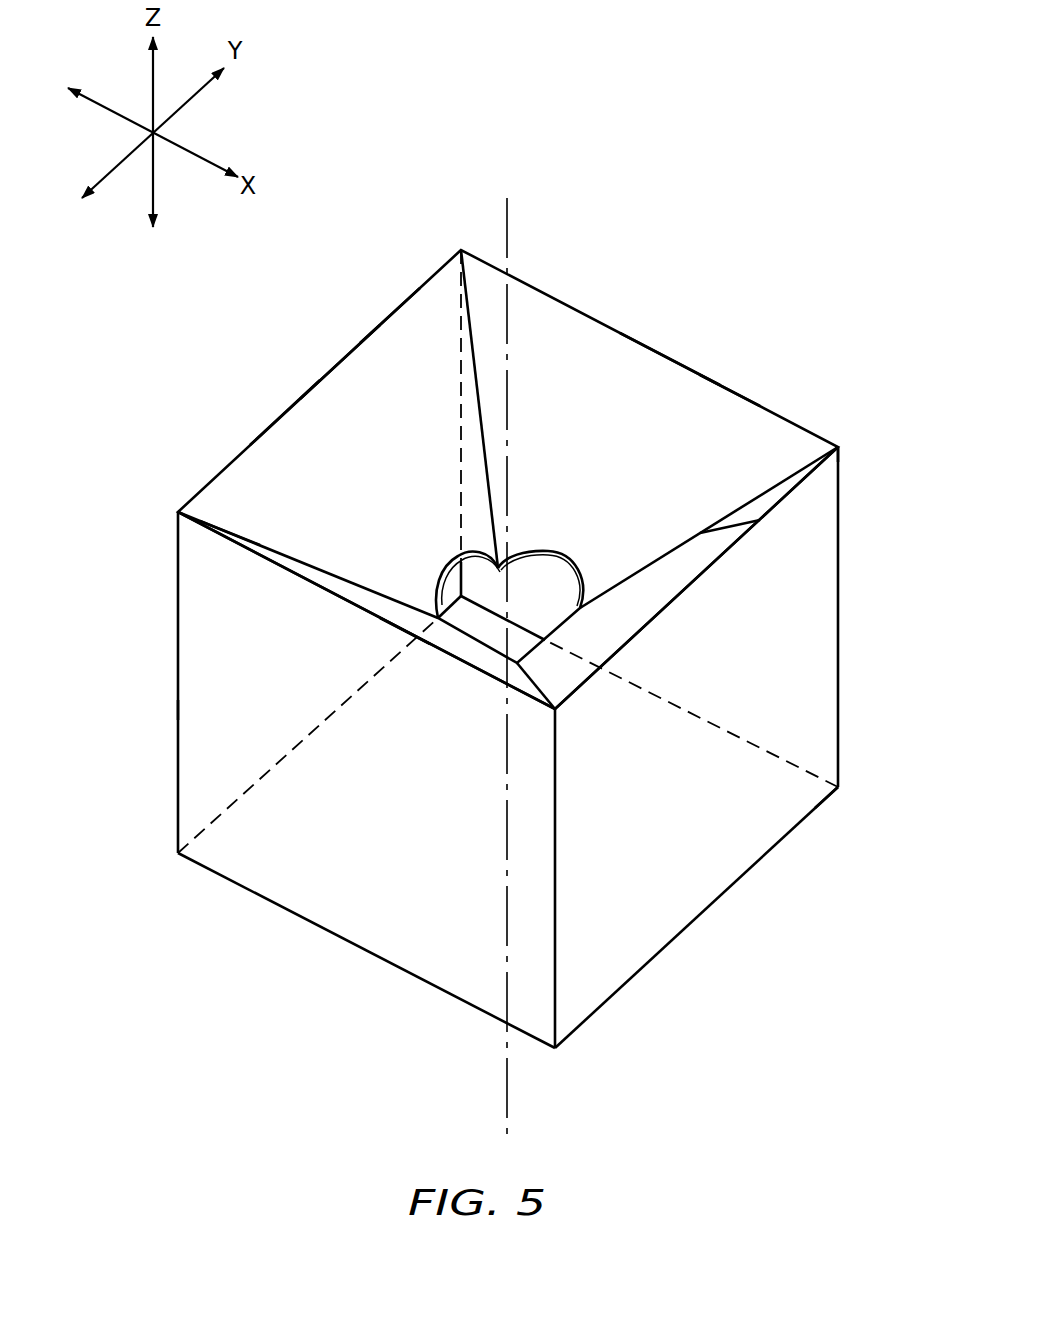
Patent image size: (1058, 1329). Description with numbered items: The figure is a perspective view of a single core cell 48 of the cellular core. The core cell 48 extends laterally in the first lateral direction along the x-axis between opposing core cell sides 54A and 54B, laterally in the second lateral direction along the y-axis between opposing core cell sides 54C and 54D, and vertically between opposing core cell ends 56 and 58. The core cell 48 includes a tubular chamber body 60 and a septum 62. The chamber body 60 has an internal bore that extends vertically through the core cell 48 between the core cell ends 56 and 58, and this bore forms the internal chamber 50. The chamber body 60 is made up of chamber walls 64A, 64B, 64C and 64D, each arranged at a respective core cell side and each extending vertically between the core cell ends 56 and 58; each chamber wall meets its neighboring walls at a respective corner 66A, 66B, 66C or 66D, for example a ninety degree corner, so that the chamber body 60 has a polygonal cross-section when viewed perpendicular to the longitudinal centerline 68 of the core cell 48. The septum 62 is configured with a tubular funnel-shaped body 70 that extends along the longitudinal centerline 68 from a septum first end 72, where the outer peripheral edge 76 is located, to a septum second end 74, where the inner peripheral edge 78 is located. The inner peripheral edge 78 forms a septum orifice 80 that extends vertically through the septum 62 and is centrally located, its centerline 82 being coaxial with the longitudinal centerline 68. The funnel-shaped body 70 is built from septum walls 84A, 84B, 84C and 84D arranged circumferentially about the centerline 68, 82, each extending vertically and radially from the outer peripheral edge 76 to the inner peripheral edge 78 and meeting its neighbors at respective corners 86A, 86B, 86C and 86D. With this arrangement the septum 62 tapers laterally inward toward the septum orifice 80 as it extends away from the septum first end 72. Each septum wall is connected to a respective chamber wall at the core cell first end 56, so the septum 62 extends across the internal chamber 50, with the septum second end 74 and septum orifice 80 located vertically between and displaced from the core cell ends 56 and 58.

The core cell 48 is at (684, 184).
The internal chamber 50 is at (540, 333).
The core cell side 54A is at (330, 367).
The core cell side 54B is at (643, 972).
The core cell side 54C is at (348, 943).
The core cell side 54D is at (670, 357).
The core cell first end 56 is at (805, 423).
The core cell second end 58 is at (815, 813).
The chamber body 60 is at (163, 711).
The septum 62 is at (238, 416).
The funnel-shaped body 70 is at (280, 465).
The chamber wall 64A is at (283, 413).
The chamber wall 64B is at (685, 885).
The chamber wall 64C is at (203, 628).
The chamber wall 64D is at (840, 633).
The corner 66A is at (177, 597).
The corner 66B is at (840, 528).
The corner 66C is at (461, 246).
The corner 66D is at (557, 980).
The longitudinal centerline 68 is at (430, 670).
The centerline 82 is at (507, 1113).
The septum first end 72 is at (364, 284).
The outer peripheral edge 76 is at (382, 330).
The septum second end 74 is at (551, 516).
The inner peripheral edge 78 is at (532, 557).
The septum orifice 80 is at (483, 588).
The septum wall 84A is at (380, 445).
The septum wall 84B is at (648, 592).
The septum wall 84C is at (397, 627).
The septum wall 84D is at (572, 405).
The corner 86A is at (317, 568).
The corner 86B is at (715, 520).
The corner 86C is at (480, 428).
The corner 86D is at (537, 686).